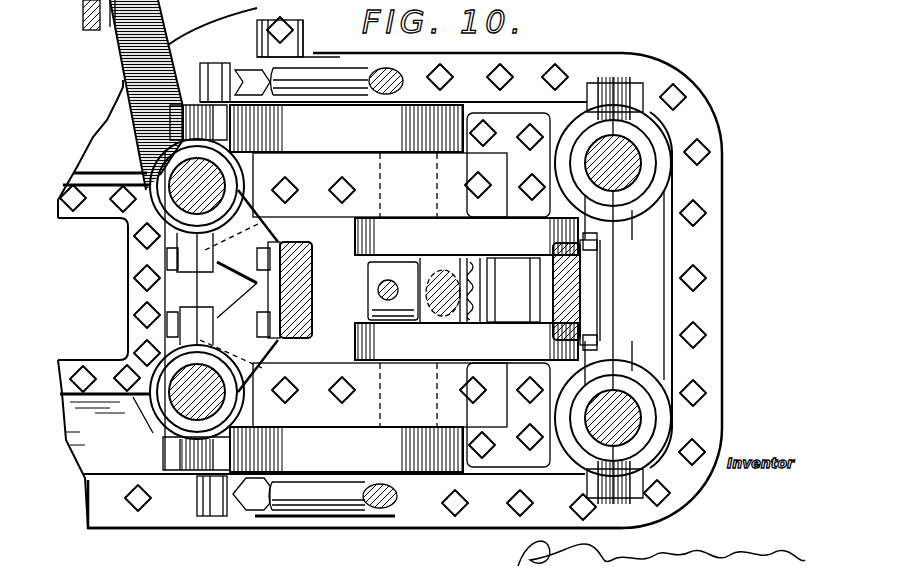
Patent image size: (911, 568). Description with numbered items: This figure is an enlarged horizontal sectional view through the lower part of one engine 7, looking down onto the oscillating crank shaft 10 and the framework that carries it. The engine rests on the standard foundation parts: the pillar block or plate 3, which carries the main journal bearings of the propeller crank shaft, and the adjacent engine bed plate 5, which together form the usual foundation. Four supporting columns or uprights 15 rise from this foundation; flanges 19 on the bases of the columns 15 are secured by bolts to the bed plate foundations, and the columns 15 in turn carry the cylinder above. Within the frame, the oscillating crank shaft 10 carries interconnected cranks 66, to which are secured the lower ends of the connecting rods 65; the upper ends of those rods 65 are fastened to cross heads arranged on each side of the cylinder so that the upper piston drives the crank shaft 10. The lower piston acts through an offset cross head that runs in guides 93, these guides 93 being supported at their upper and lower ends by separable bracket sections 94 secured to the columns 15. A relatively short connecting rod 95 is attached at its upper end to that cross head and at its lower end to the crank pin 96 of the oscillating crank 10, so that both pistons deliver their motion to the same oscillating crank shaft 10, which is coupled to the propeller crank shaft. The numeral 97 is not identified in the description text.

The pillar blocks or plate 3 is at (165, 513).
The engine bed plate 5 is at (705, 312).
The engine 7 is at (710, 369).
The oscillating crank shaft 10 is at (466, 289).
The supporting columns or uprights 15 is at (150, 163).
The flanges 19 is at (660, 138).
The connecting rods 65 is at (350, 83).
The cranks 66 is at (346, 288).
The guides 93 is at (257, 290).
The separable bracket sections 94 is at (585, 277).
The short connecting rod 95 is at (482, 262).
The crank pin 96 is at (445, 310).
The slide 97 is at (530, 322).